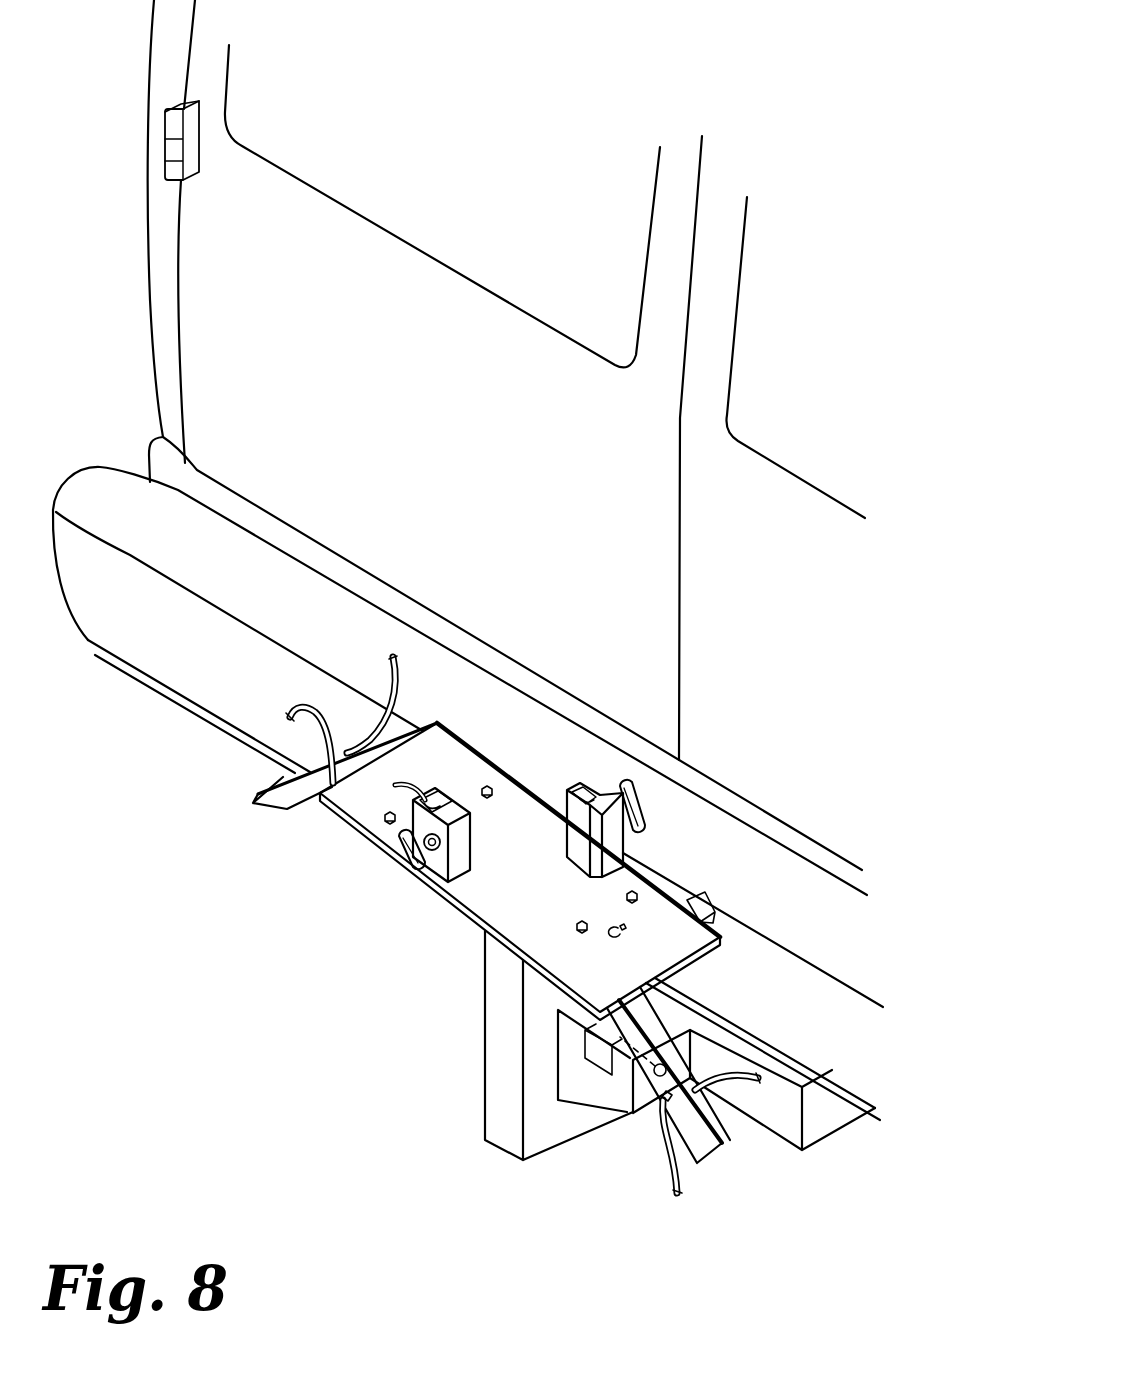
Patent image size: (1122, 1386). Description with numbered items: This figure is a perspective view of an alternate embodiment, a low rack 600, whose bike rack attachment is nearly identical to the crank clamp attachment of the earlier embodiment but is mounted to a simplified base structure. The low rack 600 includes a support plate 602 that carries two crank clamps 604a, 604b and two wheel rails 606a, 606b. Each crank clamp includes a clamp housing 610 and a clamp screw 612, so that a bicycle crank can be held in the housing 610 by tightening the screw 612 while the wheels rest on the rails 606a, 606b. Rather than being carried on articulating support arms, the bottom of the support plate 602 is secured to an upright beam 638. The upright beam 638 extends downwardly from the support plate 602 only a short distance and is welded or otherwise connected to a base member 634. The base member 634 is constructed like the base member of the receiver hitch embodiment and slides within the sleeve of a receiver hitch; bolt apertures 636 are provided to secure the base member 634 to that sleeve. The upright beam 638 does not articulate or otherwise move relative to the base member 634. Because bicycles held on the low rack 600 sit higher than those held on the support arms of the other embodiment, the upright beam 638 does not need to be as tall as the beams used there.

The low rack 600 is at (198, 1084).
The support plate 602 is at (463, 765).
The crank clamp 604a is at (590, 775).
The crank clamp 604b is at (438, 876).
The wheel rail 606a is at (282, 800).
The wheel rail 606b is at (707, 1145).
The clamp housing 610 is at (437, 790).
The clamp screw 612 is at (397, 860).
The base member 634 is at (552, 1127).
The bolt apertures 636 is at (670, 1077).
The upright beam 638 is at (495, 1052).